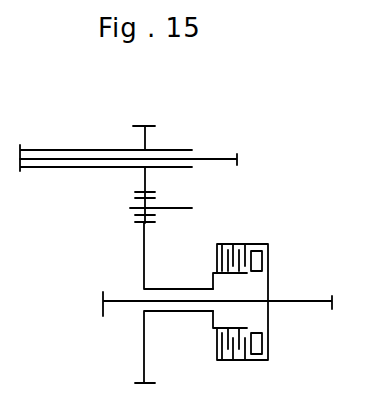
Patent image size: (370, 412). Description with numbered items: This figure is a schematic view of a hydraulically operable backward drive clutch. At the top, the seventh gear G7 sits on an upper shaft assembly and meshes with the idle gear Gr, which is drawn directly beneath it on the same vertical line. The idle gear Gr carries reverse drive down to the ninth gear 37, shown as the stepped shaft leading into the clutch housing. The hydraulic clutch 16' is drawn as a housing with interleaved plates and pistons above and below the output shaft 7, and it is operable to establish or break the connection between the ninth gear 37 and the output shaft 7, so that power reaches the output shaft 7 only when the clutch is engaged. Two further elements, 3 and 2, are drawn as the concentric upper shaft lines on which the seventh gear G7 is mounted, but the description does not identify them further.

The hollow shaft 3 is at (78, 150).
The input shaft 2 is at (235, 157).
The seventh gear G7 is at (155, 125).
The idle gear Gr is at (142, 198).
The ninth gear 37 is at (143, 256).
The hydraulic clutch 16' is at (264, 286).
The output shaft 7 is at (320, 303).